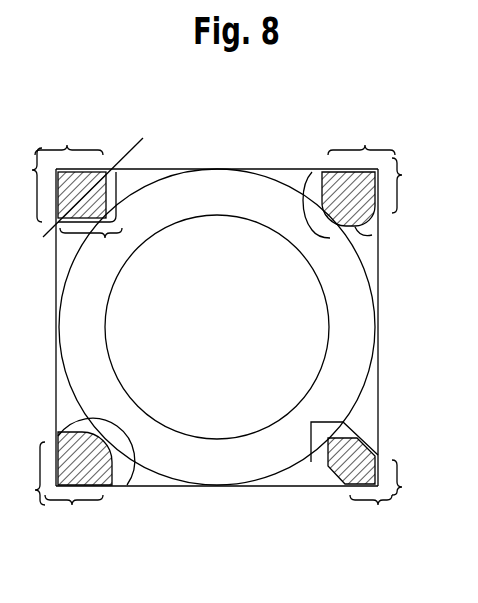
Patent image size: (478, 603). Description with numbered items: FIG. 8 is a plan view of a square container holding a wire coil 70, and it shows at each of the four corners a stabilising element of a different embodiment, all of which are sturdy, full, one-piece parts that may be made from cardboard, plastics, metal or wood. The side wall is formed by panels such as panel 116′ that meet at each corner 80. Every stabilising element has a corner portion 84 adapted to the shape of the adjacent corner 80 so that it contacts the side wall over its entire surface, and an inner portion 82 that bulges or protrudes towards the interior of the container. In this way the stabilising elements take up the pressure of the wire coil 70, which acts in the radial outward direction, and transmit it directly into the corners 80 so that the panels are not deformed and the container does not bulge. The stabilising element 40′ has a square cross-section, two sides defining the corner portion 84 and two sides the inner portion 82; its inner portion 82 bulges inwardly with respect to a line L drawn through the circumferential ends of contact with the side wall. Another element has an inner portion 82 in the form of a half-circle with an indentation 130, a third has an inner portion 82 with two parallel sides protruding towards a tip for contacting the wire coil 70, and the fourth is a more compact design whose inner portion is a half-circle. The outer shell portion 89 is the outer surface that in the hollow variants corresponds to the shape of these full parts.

The wire coil 70 is at (237, 205).
The panel 116′ is at (200, 168).
The stabilising element 40′ is at (80, 182).
The line L is at (135, 143).
The inner portion 82 is at (290, 412).
The corner portion 84 is at (215, 329).
The corner 80 is at (34, 170).
The outer shell portion 89 is at (107, 194).
The indentation 130 is at (326, 222).